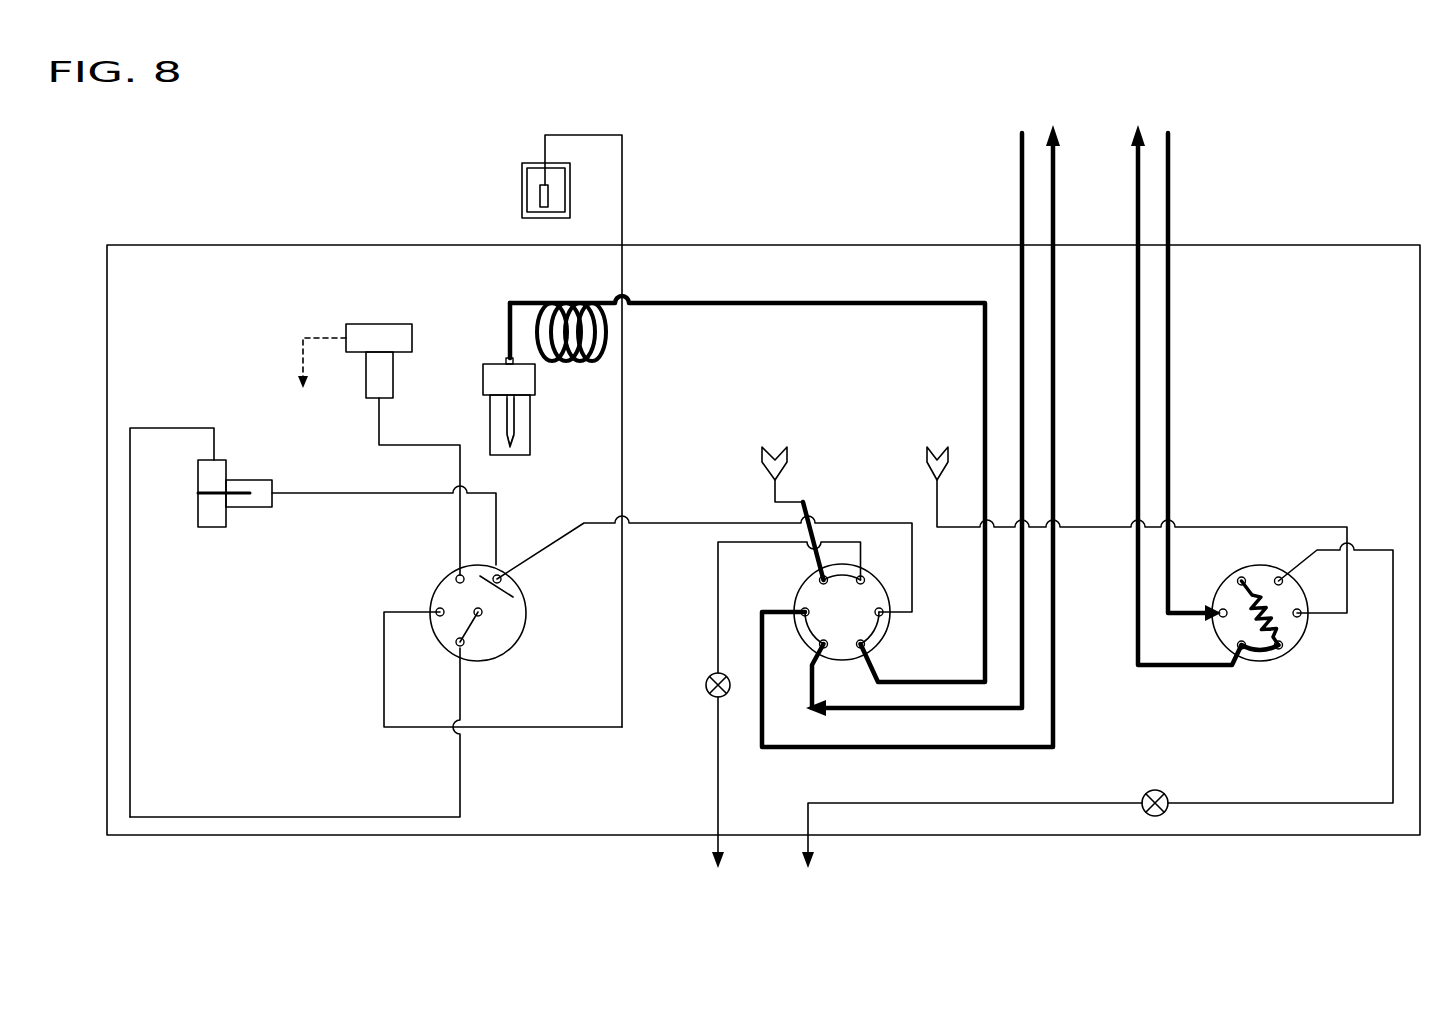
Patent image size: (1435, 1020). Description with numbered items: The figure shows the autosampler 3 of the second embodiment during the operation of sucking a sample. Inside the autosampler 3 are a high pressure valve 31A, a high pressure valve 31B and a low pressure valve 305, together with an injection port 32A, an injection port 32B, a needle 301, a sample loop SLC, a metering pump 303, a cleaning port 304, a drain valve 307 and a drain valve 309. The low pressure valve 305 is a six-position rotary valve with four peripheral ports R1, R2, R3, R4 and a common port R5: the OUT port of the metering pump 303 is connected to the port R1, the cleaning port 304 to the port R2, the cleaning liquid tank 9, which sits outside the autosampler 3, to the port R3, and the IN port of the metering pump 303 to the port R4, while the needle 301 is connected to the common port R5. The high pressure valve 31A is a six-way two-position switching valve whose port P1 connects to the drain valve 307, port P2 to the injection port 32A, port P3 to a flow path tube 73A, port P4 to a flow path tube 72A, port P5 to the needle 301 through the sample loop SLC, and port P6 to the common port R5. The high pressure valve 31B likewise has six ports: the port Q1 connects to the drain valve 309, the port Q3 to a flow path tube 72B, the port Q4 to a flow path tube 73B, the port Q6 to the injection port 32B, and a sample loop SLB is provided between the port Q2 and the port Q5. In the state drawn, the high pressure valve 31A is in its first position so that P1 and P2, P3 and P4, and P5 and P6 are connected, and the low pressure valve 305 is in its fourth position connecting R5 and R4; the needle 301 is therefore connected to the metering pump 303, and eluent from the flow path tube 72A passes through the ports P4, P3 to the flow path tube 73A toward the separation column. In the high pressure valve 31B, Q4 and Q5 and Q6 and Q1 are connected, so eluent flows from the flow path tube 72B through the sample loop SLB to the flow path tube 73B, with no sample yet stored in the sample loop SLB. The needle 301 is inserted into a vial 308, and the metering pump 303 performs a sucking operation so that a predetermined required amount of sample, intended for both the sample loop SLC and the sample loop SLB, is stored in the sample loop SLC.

The autosampler 3 is at (1285, 245).
The cleaning liquid tank 9 is at (522, 183).
The cleaning port 304 is at (393, 372).
The needle 301 is at (492, 408).
The vial 308 is at (532, 413).
The sample loop SLC is at (598, 362).
The metering pump 303 is at (212, 527).
The low pressure valve 305 is at (645, 614).
The port R1 is at (501, 575).
The port R2 is at (452, 578).
The port R3 is at (440, 617).
The port R4 is at (461, 648).
The common port R5 is at (483, 613).
The high pressure valve 31A is at (842, 589).
The port P1 is at (865, 577).
The port P2 is at (813, 577).
The port P3 is at (797, 610).
The port P4 is at (817, 643).
The port P5 is at (863, 647).
The port P6 is at (883, 613).
The injection port 32A is at (765, 460).
The injection port 32B is at (928, 455).
The drain valve 307 is at (707, 690).
The drain valve 309 is at (1167, 797).
The flow path tube 72A is at (1020, 178).
The flow path tube 72B is at (1170, 218).
The flow path tube 73A is at (1057, 227).
The flow path tube 73B is at (1135, 165).
The high pressure valve 31B is at (1269, 594).
The sample loop SLB is at (1270, 620).
The port Q1 is at (1280, 573).
The port Q2 is at (1238, 575).
The port Q3 is at (1218, 608).
The port Q4 is at (1237, 640).
The port Q5 is at (1280, 645).
The port Q6 is at (1300, 615).